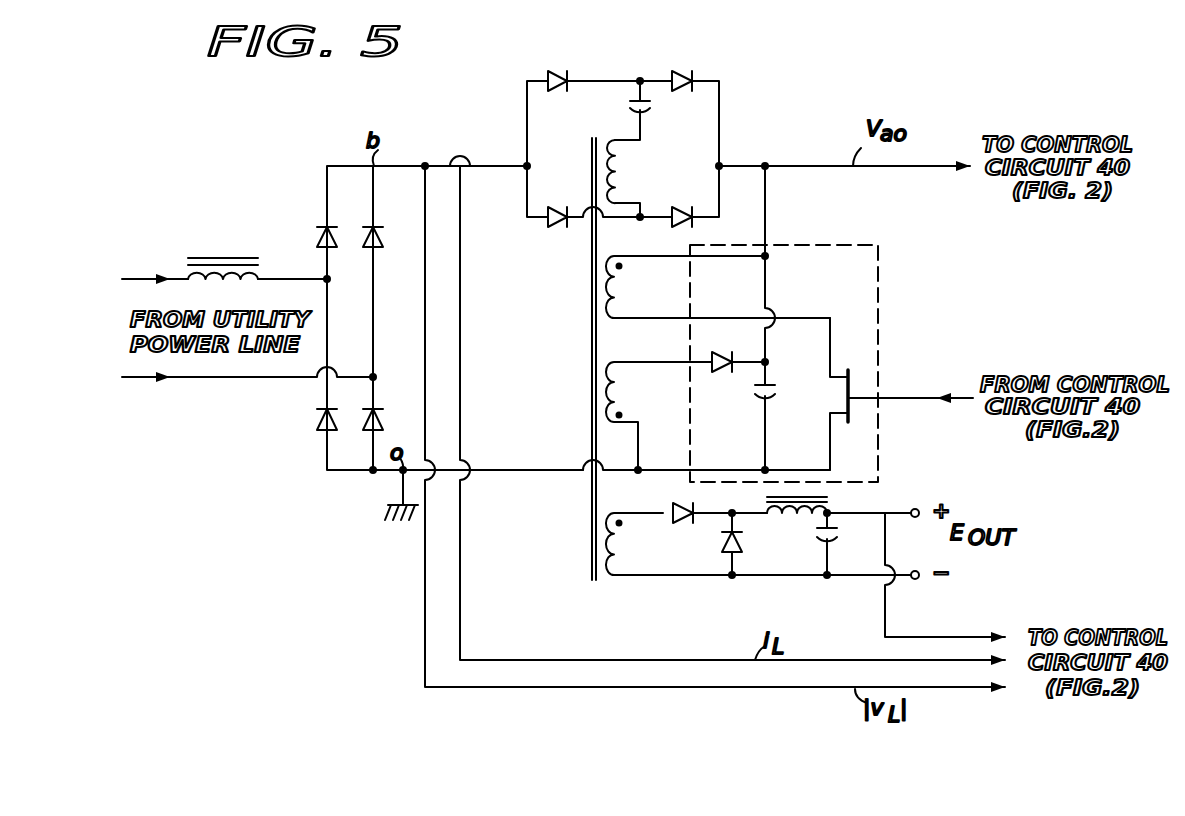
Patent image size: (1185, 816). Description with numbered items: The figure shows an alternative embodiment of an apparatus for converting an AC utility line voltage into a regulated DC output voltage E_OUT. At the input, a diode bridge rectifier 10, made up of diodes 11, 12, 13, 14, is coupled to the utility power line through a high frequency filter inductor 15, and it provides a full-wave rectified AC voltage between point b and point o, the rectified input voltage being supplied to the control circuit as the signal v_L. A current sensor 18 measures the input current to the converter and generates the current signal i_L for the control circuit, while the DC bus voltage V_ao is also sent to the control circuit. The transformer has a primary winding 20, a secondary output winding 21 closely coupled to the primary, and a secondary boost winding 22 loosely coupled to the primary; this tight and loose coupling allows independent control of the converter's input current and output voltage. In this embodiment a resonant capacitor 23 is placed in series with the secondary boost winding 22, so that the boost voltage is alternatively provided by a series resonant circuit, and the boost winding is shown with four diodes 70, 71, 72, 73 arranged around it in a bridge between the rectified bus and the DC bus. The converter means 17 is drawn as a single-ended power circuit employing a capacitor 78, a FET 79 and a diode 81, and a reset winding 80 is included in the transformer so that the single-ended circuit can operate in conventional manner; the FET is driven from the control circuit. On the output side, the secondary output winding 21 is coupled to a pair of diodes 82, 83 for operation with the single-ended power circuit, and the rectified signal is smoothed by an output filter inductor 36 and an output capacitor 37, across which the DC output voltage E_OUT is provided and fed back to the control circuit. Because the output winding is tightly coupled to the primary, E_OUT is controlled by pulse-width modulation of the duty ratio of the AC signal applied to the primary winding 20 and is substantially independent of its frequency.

The diode bridge rectifier 10 is at (436, 318).
The diode 11 is at (317, 238).
The diode 12 is at (384, 237).
The diode 13 is at (317, 420).
The diode 14 is at (383, 418).
The high frequency filter inductor 15 is at (230, 282).
The converter means 17 is at (867, 245).
The current sensor 18 is at (462, 171).
The primary winding 20 is at (616, 283).
The secondary output winding 21 is at (616, 578).
The secondary boost winding 22 is at (612, 172).
The resonant capacitor 23 is at (650, 107).
The output filter inductor 36 is at (800, 516).
The output capacitor 37 is at (847, 534).
The diode 70 is at (563, 72).
The diode 71 is at (558, 228).
The diode 72 is at (682, 72).
The diode 73 is at (689, 207).
The capacitor 78 is at (759, 398).
The FET 79 is at (843, 377).
The reset winding 80 is at (616, 400).
The diode 81 is at (722, 372).
The diode 82 is at (682, 504).
The diode 83 is at (718, 543).